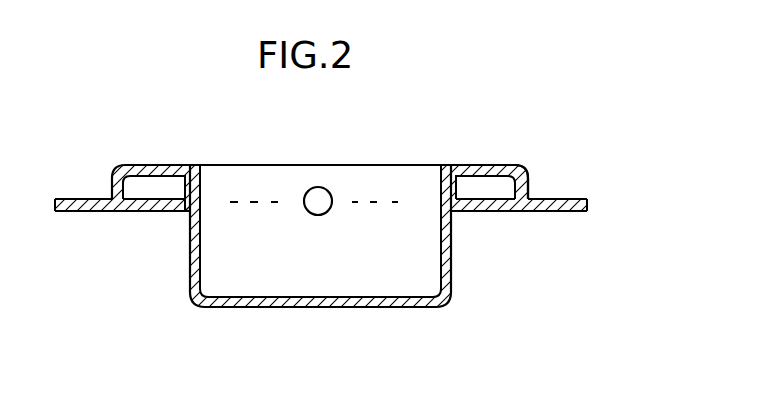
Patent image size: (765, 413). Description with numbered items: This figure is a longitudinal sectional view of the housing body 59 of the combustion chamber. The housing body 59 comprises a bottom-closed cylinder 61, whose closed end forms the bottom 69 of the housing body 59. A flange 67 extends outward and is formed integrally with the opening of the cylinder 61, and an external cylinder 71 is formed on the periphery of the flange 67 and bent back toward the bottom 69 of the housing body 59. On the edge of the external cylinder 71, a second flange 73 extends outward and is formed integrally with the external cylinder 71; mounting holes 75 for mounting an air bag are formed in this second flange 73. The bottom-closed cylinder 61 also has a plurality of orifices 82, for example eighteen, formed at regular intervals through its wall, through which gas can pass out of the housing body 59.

The housing body 59 is at (456, 261).
The bottom-closed cylinder 61 is at (190, 264).
The bottom 69 is at (296, 300).
The flange 67 is at (485, 163).
The external cylinder 71 is at (529, 188).
The second flange 73 is at (587, 204).
The mounting holes 75 is at (555, 211).
The orifices 82 is at (311, 195).